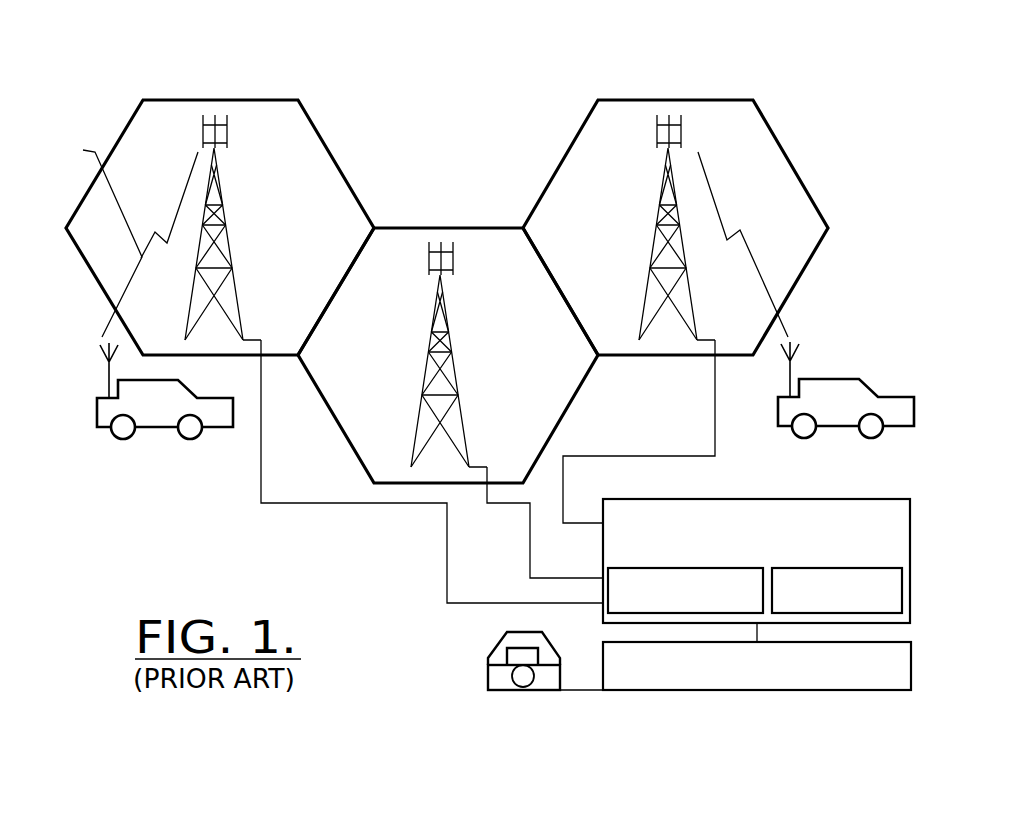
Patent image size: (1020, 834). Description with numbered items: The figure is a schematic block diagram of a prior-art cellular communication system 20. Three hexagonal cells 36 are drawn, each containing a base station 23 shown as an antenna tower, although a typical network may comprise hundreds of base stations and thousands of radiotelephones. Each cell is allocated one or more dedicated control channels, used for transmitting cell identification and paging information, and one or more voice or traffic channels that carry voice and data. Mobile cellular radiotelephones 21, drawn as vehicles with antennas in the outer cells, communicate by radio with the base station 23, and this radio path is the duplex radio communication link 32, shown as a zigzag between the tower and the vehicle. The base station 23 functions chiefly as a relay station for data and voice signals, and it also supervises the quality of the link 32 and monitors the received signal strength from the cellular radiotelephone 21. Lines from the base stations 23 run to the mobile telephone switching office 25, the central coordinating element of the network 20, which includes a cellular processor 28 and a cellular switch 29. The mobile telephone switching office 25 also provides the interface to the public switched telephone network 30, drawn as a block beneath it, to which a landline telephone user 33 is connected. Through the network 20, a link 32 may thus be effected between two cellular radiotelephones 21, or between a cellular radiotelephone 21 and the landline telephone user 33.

The cellular communication system 20 is at (767, 85).
The mobile cellular radiotelephone 21 is at (153, 428).
The base station 23 is at (246, 238).
The mobile telephone switching office 25 is at (807, 498).
The cellular processor 28 is at (667, 567).
The cellular switch 29 is at (817, 567).
The public switched telephone network 30 is at (680, 692).
The duplex radio communication link 32 is at (822, 158).
The landline telephone user 33 is at (488, 678).
The cell 36 is at (330, 152).